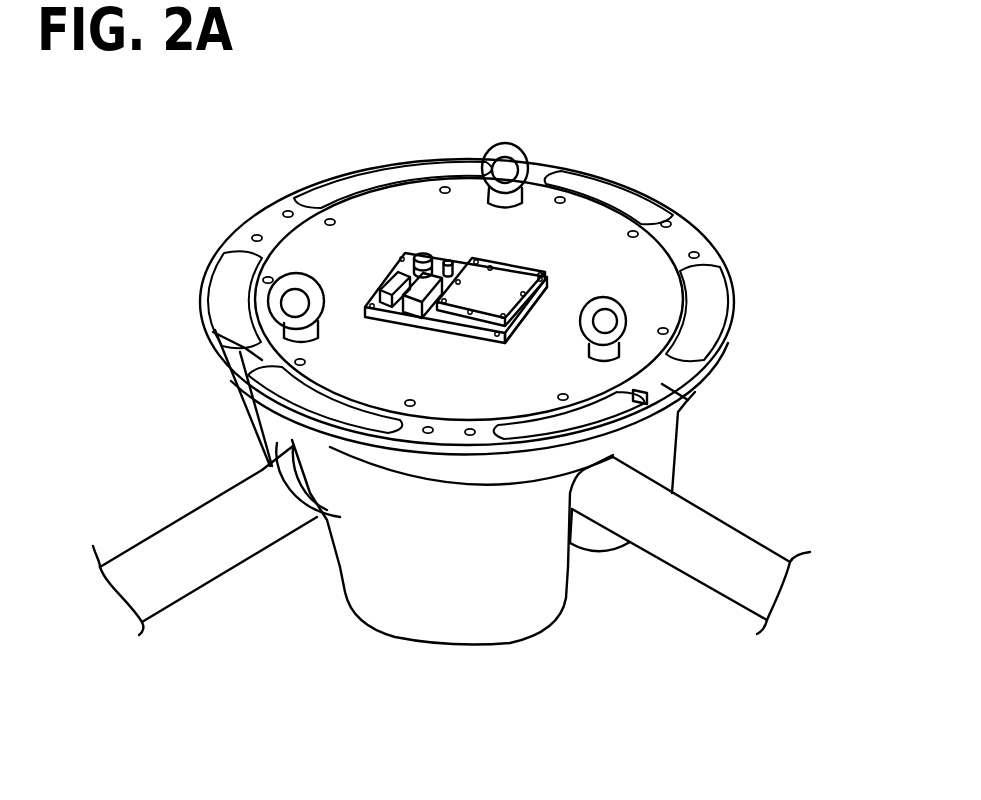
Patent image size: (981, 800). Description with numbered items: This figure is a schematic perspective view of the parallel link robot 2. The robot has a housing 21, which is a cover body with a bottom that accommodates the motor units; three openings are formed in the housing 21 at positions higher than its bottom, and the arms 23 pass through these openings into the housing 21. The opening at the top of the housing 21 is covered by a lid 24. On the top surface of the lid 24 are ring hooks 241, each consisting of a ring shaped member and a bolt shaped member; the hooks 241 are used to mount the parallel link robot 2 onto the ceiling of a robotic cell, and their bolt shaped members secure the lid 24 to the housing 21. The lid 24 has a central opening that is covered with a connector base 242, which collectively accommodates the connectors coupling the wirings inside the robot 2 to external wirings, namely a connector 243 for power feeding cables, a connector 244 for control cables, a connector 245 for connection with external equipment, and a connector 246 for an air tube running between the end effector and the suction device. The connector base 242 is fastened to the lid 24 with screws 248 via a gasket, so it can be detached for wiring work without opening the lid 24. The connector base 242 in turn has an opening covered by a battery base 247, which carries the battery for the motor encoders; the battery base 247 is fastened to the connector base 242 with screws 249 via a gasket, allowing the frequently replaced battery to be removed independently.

The parallel link robot 2 is at (734, 141).
The housing 21 is at (541, 603).
The arms 23 is at (158, 533).
The lid 24 is at (564, 208).
The ring hooks 241 is at (497, 147).
The connector base 242 is at (397, 308).
The connector for power feeding cables 243 is at (421, 298).
The connector for control cables 244 is at (393, 283).
The connector for connection with external equipment 245 is at (421, 255).
The connector for connection of an air tube 246 is at (448, 261).
The battery base 247 is at (515, 275).
The screws 248 is at (419, 251).
The screws 249 is at (513, 333).